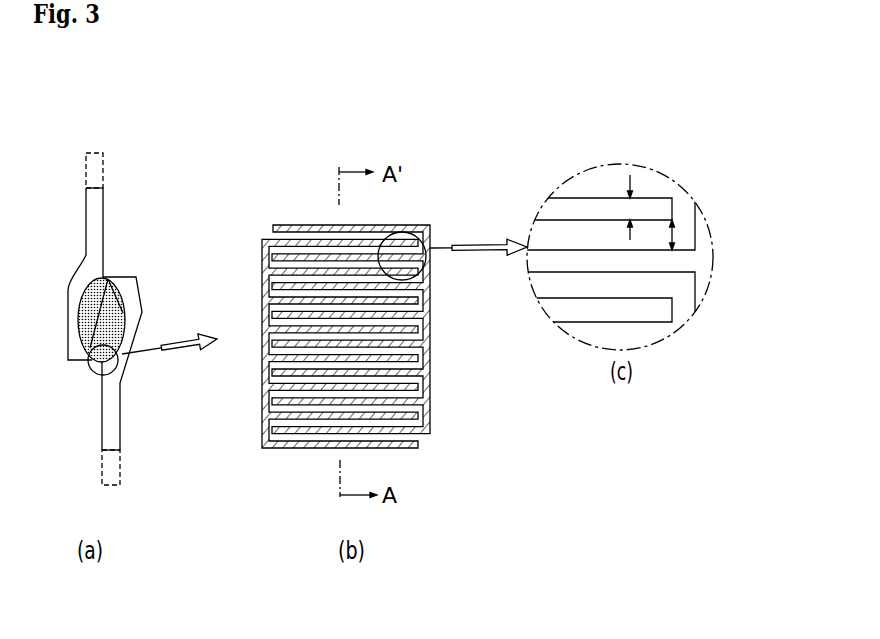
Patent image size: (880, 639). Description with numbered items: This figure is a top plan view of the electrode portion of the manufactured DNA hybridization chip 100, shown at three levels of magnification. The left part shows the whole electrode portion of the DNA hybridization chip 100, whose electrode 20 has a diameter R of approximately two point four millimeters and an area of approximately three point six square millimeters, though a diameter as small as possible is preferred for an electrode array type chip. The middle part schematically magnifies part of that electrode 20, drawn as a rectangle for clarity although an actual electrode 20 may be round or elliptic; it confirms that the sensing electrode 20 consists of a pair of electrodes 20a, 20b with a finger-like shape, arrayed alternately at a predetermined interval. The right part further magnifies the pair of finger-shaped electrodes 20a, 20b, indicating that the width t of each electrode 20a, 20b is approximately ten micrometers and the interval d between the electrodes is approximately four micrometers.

The DNA hybridization chip 100 is at (119, 127).
The diameter R is at (92, 278).
The electrode 20 is at (123, 308).
The electrode 20a is at (283, 448).
The electrode 20b is at (424, 440).
The width t is at (633, 212).
The interval d is at (672, 238).